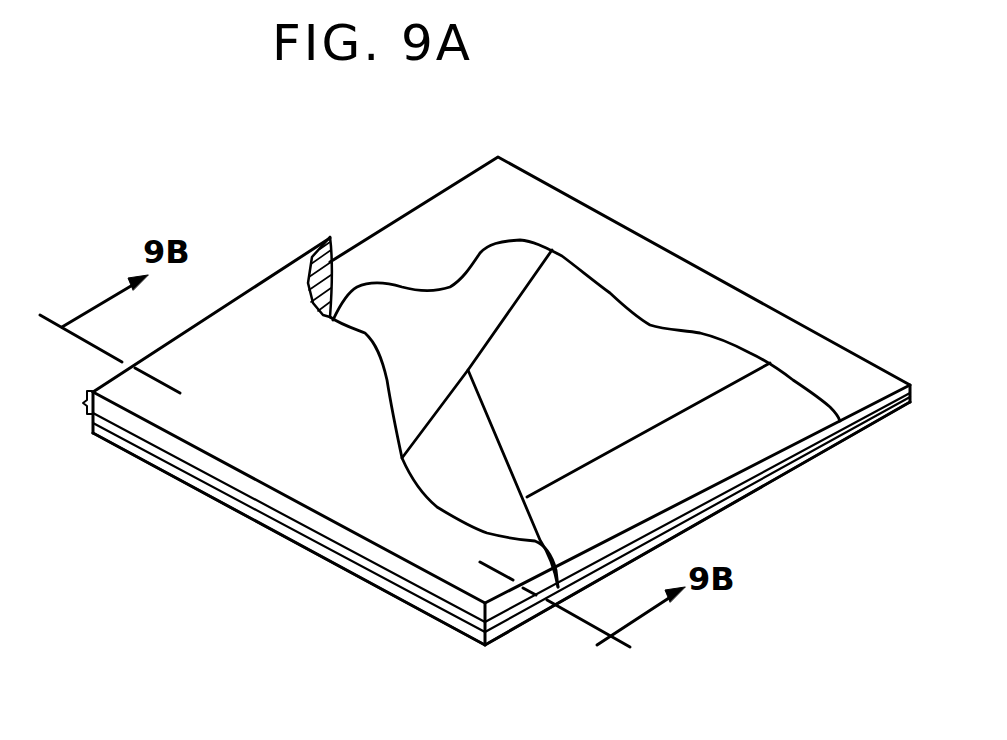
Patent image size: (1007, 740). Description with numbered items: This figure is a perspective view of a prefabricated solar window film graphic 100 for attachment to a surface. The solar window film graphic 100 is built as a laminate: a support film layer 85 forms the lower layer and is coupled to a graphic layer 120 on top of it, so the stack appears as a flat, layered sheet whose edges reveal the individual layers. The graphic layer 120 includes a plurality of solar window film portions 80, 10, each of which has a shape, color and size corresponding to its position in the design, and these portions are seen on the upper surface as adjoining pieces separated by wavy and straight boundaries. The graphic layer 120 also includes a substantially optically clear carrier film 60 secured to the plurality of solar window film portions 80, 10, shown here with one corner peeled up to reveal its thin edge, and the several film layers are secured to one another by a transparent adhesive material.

The solar window film portion 10 is at (167, 453).
The optically clear carrier film 60 is at (281, 293).
The solar window film portions 80 is at (441, 344).
The support film layer 85 is at (410, 598).
The solar window film graphic 100 is at (287, 565).
The graphic layer 120 is at (84, 403).